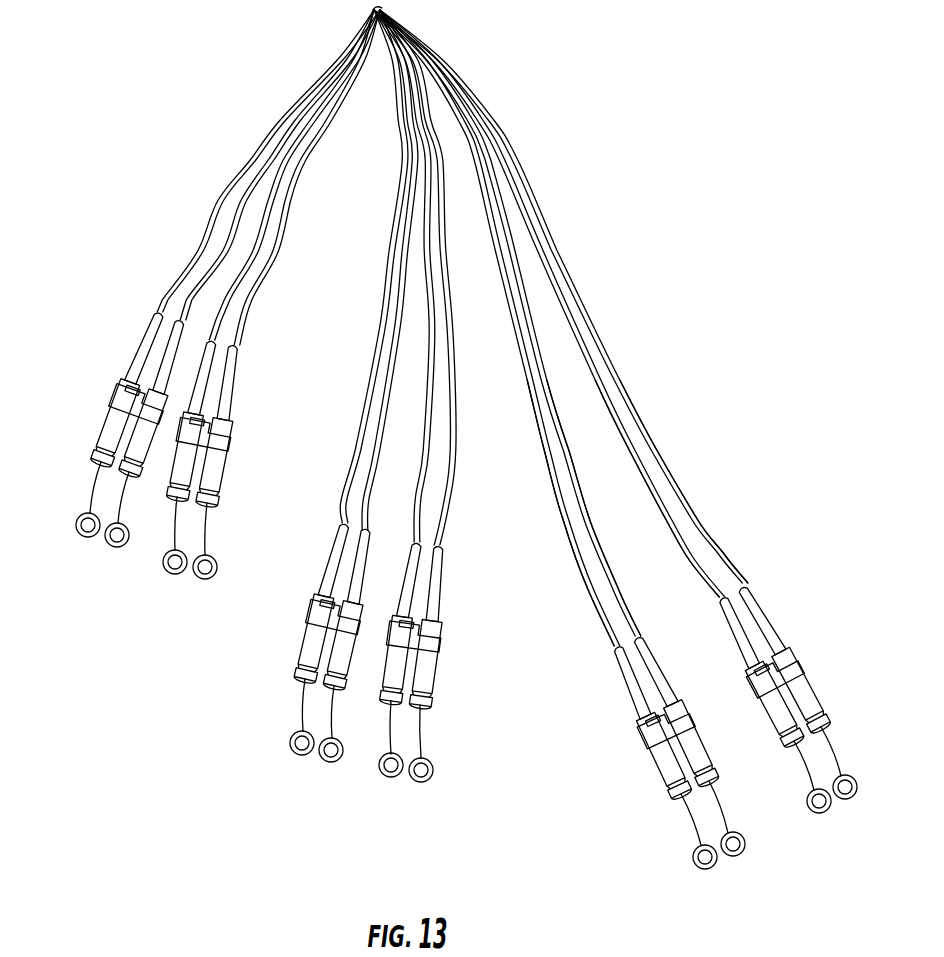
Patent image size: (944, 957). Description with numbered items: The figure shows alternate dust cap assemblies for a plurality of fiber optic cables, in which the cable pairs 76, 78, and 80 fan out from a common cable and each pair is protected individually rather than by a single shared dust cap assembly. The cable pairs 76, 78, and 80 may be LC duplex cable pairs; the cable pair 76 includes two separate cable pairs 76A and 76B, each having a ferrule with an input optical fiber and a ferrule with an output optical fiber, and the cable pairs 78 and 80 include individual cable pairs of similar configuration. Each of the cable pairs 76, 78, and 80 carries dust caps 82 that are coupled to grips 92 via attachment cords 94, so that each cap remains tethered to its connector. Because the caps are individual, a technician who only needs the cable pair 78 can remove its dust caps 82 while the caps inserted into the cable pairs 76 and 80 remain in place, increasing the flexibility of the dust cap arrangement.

The cable pair 76 is at (487, 104).
The cable pair 76A is at (698, 507).
The cable pair 76B is at (610, 566).
The cable pair 78 is at (415, 72).
The cable pair 80 is at (347, 54).
The dust cap 82 is at (95, 462).
The grip 92 is at (173, 576).
The attachment cord 94 is at (90, 492).